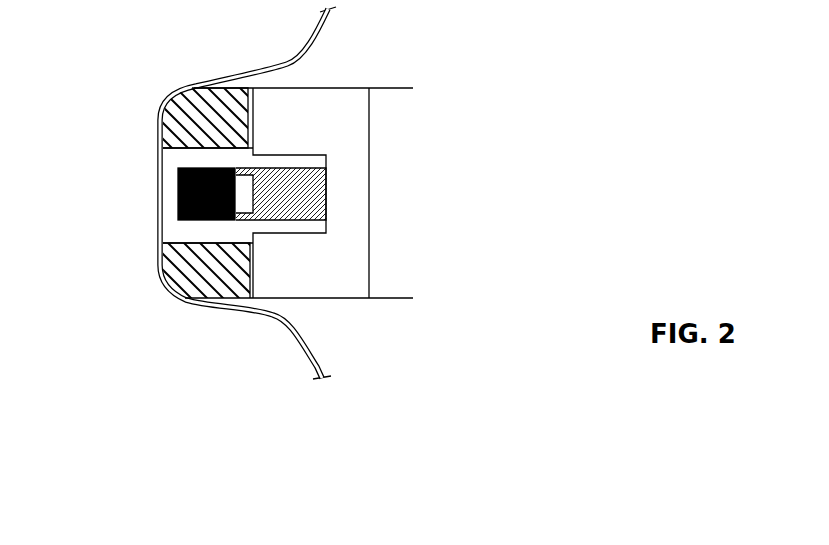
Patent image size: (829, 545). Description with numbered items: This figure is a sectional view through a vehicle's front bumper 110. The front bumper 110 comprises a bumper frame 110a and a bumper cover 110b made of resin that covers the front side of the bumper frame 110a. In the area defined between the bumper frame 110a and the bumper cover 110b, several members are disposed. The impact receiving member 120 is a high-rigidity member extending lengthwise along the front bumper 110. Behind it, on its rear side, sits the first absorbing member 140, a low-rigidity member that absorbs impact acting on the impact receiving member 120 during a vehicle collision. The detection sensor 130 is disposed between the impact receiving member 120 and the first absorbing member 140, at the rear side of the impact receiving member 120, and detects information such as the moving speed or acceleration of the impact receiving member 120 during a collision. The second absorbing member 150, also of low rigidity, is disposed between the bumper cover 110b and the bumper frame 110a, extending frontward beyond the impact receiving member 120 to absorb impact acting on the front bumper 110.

The front bumper 110 is at (187, 82).
The bumper frame 110a is at (280, 284).
The bumper cover 110b is at (165, 98).
The impact receiving member 120 is at (203, 221).
The detection sensor 130 is at (244, 197).
The first absorbing member 140 is at (273, 167).
The second absorbing member 150 is at (157, 148).